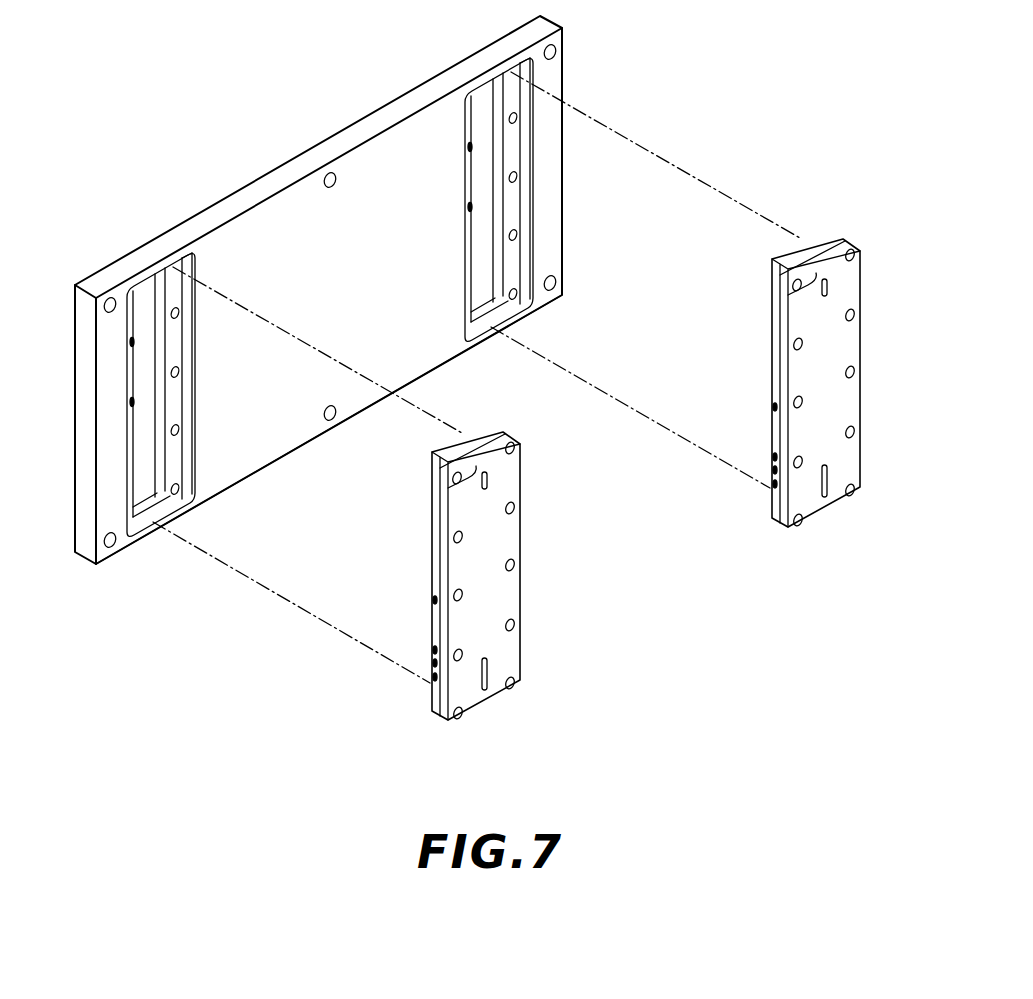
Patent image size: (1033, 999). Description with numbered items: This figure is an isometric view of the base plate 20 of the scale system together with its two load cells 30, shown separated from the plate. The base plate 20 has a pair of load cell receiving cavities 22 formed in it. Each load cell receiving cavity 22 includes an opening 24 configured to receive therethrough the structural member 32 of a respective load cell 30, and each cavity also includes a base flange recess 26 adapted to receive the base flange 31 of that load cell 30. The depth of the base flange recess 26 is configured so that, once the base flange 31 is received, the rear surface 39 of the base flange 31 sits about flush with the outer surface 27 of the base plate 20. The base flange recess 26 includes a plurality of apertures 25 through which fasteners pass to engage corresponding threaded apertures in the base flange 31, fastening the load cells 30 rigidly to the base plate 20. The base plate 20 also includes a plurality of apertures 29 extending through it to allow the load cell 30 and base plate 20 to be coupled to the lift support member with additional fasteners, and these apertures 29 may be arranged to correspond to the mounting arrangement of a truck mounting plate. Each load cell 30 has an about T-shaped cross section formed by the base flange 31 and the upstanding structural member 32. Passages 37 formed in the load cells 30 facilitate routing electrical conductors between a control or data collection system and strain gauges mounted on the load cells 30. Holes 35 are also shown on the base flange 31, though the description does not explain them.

The base plate 20 is at (233, 193).
The load cell receiving cavity 22 is at (444, 138).
The opening 24 is at (148, 290).
The apertures 25 is at (181, 432).
The base flange recess 26 is at (174, 287).
The outer surface 27 is at (301, 294).
The apertures 29 is at (557, 52).
The load cell 30 is at (671, 443).
The base flange 31 is at (518, 468).
The structural member 32 is at (462, 440).
The bracket holes 35 is at (515, 565).
The passages 37 is at (496, 482).
The rear surface 39 is at (475, 554).